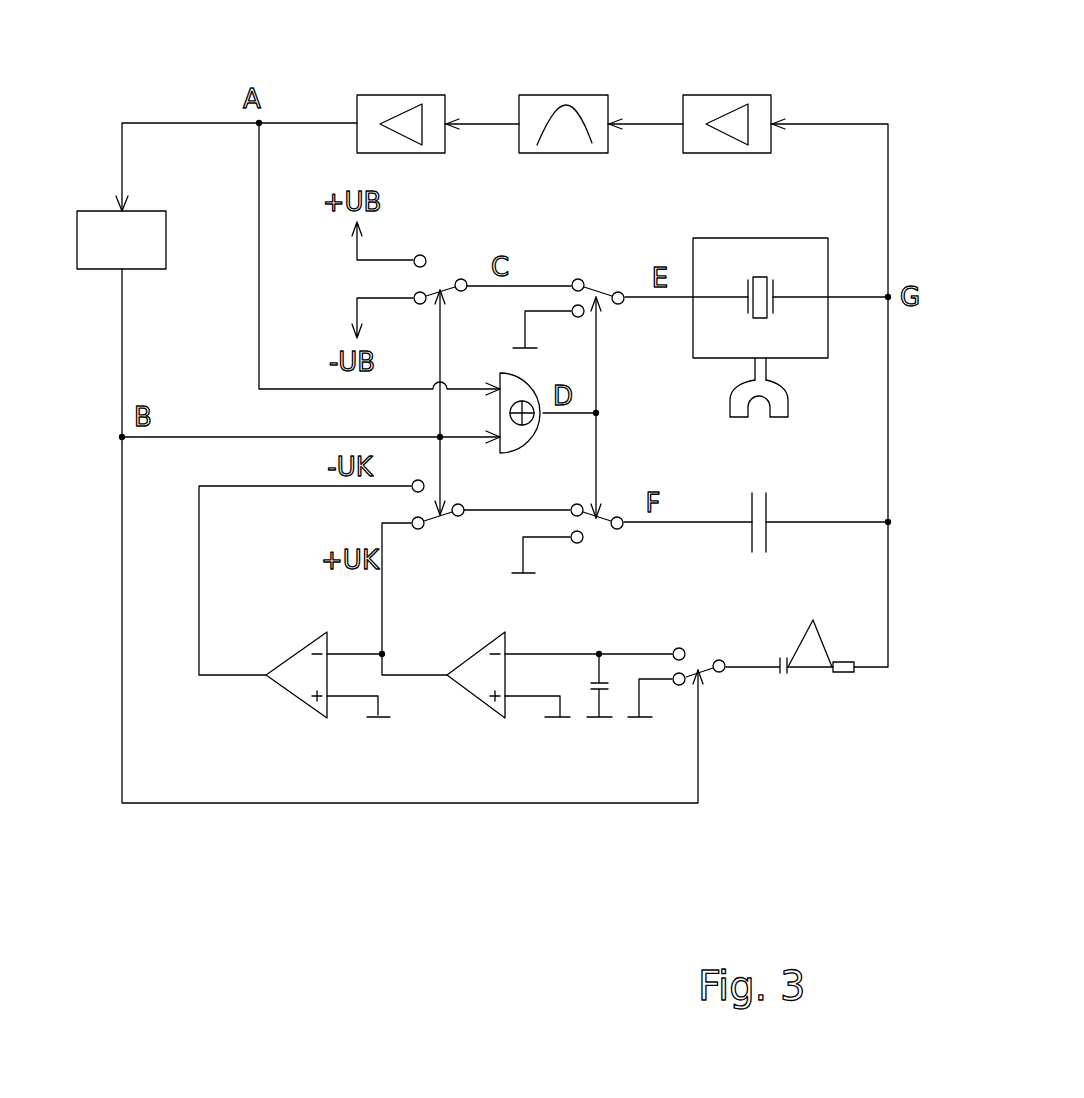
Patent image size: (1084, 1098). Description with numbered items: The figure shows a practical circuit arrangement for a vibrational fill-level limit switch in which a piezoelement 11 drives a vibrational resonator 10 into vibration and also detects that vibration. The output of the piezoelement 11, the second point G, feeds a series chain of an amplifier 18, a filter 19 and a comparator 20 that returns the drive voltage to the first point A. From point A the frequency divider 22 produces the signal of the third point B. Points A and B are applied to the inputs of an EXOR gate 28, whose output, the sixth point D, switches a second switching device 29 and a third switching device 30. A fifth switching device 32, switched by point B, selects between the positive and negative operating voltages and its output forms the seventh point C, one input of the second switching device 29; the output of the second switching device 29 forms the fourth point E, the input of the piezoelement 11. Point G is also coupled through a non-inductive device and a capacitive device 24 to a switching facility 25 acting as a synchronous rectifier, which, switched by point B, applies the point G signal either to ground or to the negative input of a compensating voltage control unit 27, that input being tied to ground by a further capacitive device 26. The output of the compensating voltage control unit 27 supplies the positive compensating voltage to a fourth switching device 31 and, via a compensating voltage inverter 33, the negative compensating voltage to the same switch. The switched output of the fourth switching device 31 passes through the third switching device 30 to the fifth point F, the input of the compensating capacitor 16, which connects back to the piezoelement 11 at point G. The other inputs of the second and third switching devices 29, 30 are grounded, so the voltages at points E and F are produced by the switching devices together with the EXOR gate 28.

The vibrational resonator 10 is at (732, 400).
The piezoelement 11 is at (788, 237).
The compensating capacitor 16 is at (768, 512).
The amplifier 18 is at (737, 93).
The filter 19 is at (577, 93).
The comparator 20 is at (412, 93).
The frequency divider 22 is at (146, 208).
The capacitive device 24 is at (790, 630).
The switching facility 25 is at (708, 673).
The capacitive device 26 is at (603, 695).
The compensating voltage control unit 27 is at (458, 660).
The EXOR gate 28 is at (523, 448).
The second switching device 29 is at (598, 292).
The third switching device 30 is at (597, 528).
The fourth switching device 31 is at (433, 516).
The fifth switching device 32 is at (437, 288).
The compensating voltage inverter 33 is at (283, 658).